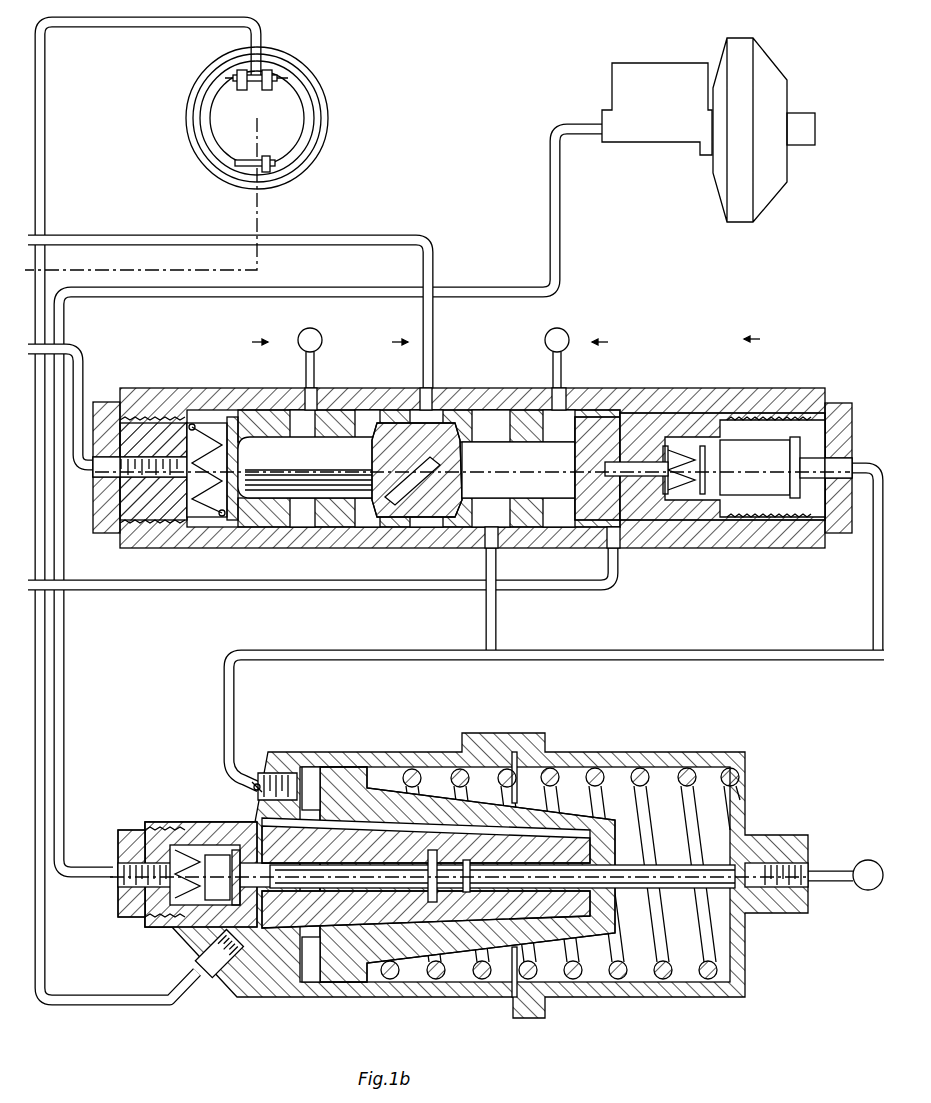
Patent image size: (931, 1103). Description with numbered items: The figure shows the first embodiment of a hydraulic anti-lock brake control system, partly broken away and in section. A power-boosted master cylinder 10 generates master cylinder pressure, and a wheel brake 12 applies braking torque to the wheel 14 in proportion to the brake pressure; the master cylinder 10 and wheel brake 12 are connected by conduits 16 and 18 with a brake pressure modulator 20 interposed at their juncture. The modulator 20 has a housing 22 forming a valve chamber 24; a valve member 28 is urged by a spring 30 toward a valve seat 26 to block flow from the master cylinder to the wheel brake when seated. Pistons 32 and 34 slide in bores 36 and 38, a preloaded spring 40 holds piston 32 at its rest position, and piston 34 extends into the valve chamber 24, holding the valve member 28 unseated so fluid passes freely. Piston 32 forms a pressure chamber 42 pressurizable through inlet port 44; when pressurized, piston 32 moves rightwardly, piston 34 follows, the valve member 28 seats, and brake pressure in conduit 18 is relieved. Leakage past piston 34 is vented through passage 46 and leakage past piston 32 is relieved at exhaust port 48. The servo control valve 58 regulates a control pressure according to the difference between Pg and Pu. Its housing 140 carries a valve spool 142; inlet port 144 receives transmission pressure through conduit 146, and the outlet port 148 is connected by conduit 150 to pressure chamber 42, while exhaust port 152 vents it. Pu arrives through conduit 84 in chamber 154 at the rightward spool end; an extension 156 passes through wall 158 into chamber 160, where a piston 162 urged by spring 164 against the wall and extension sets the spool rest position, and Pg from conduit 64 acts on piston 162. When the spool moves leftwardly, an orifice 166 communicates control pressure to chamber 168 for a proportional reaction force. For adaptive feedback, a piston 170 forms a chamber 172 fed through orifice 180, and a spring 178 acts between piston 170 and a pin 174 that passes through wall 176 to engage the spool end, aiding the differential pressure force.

The master cylinder 10 is at (672, 62).
The wheel brake 12 is at (265, 70).
The wheel 14 is at (300, 118).
The conduit 16 is at (350, 290).
The conduit 18 is at (46, 148).
The brake pressure modulator 20 is at (460, 869).
The housing 22 is at (290, 1000).
The valve chamber 24 is at (215, 855).
The valve seat 26 is at (236, 850).
The valve member 28 is at (195, 850).
The spring 30 is at (170, 840).
The piston 32 is at (345, 775).
The piston 34 is at (345, 893).
The bore 36 is at (620, 770).
The bore 38 is at (405, 893).
The spring 40 is at (690, 770).
The pressure chamber 42 is at (310, 768).
The inlet port 44 is at (280, 775).
The passage 46 is at (250, 788).
The exhaust port 48 is at (815, 875).
The servo control valve 58 is at (472, 489).
The conduit 64 is at (85, 385).
The conduit 84 is at (80, 590).
The housing 140 is at (493, 420).
The valve spool 142 is at (598, 435).
The inlet port 144 is at (430, 400).
The conduit 146 is at (50, 240).
The Pc outlet port 148 is at (500, 548).
The conduit 150 is at (355, 655).
The exhaust port 152 is at (553, 410).
The chamber 154 is at (605, 430).
The extension 156 is at (288, 450).
The wall 158 is at (318, 438).
The chamber 160 is at (233, 420).
The piston 162 is at (280, 520).
The spring 164 is at (200, 425).
The orifice 166 is at (420, 520).
The chamber 168 is at (368, 520).
The piston 170 is at (750, 445).
The chamber 172 is at (795, 440).
The pin 174 is at (630, 468).
The wall 176 is at (632, 445).
The spring 178 is at (682, 448).
The orifice 180 is at (873, 566).